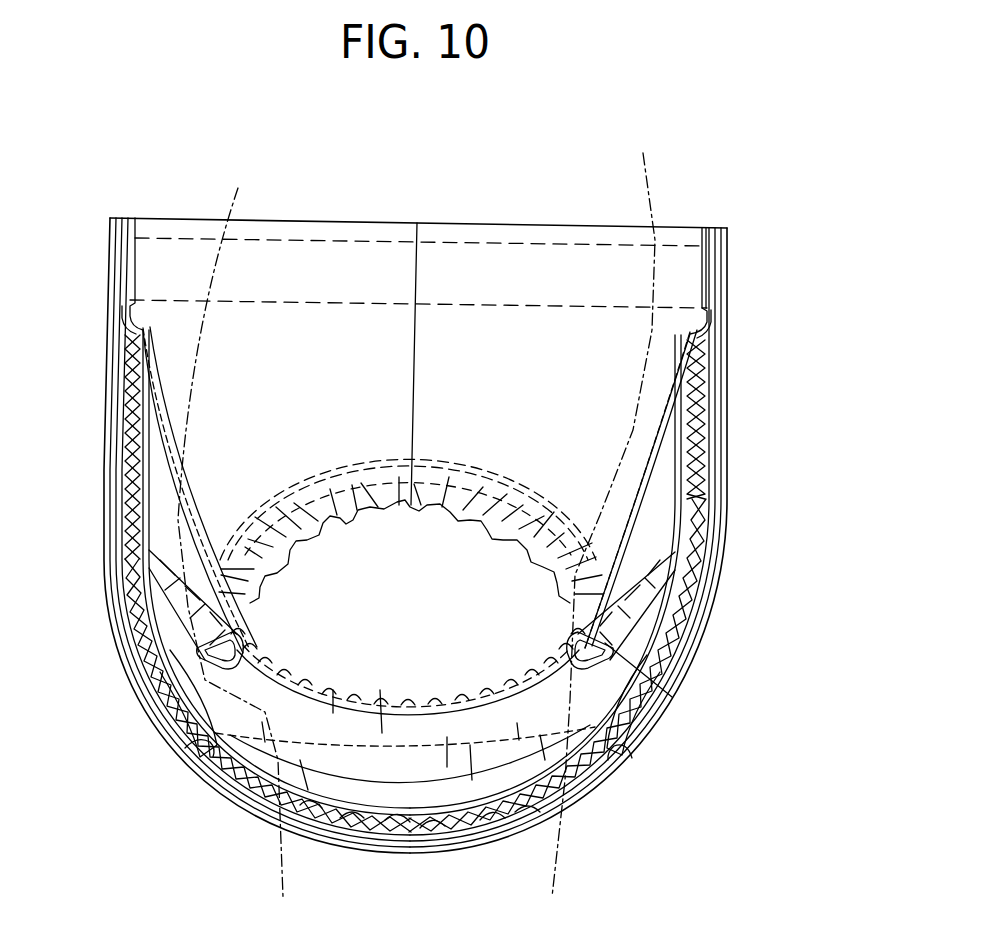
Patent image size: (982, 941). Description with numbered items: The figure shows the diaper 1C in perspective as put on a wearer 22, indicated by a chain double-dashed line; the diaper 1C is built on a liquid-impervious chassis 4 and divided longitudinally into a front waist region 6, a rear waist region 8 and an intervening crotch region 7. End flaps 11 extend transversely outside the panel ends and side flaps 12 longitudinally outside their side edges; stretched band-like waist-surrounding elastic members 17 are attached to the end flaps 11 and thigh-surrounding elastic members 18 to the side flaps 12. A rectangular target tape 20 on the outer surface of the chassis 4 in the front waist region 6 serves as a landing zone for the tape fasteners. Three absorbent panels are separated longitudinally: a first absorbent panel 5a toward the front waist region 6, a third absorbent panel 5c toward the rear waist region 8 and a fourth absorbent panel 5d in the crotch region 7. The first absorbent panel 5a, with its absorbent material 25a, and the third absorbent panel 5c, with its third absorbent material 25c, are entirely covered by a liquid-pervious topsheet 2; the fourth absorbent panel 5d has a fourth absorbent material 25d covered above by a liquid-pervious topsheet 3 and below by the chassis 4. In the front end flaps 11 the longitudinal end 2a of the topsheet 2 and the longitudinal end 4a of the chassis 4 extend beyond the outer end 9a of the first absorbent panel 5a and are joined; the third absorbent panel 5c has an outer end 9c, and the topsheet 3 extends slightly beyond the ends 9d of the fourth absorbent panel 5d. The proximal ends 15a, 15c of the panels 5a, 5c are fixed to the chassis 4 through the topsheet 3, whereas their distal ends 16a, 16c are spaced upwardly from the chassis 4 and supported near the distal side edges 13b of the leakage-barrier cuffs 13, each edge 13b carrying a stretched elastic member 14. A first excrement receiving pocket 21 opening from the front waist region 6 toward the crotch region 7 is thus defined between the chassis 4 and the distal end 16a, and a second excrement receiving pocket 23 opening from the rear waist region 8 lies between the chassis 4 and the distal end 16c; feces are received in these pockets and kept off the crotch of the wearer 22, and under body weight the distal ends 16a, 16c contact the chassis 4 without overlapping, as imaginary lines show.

The diaper 1C is at (772, 488).
The liquid-pervious topsheet 2 is at (155, 578).
The longitudinal end of the topsheet 2a is at (136, 238).
The liquid-pervious topsheet 3 is at (402, 842).
The liquid-impervious chassis 4 is at (498, 830).
The longitudinal end of the chassis 4a is at (112, 240).
The first absorbent panel 5a is at (705, 522).
The third absorbent panel 5c is at (122, 528).
The fourth absorbent panel 5d is at (312, 822).
The front waist region 6 is at (722, 462).
The crotch region 7 is at (367, 850).
The rear waist region 8 is at (108, 432).
The outer end of the first absorbent panel 9a is at (712, 325).
The outer end of the third absorbent panel 9c is at (120, 322).
The longitudinally opposite ends of the fourth absorbent panel 9d is at (195, 760).
The end flaps 11 is at (375, 250).
The side flaps 12 is at (340, 515).
The leakage-barrier cuffs 13 is at (440, 702).
The distal side edge 13b is at (336, 700).
The elastically stretchable member 14 is at (378, 712).
The proximal end of the first absorbent panel 15a is at (690, 392).
The second proximal end 15c is at (130, 380).
The first distal end 16a is at (566, 640).
The second distal end 16c is at (240, 640).
The waist-surrounding elastic members 17 is at (505, 258).
The thigh-surrounding elastic members 18 is at (470, 537).
The target tape 20 is at (727, 362).
The first excrement receiving pocket 21 is at (627, 752).
The wearer 22 is at (652, 160).
The second excrement receiving pocket 23 is at (232, 636).
The right liner layer 25a is at (700, 555).
The third absorbent material 25c is at (123, 490).
The fourth liquid absorbent material 25d is at (220, 792).